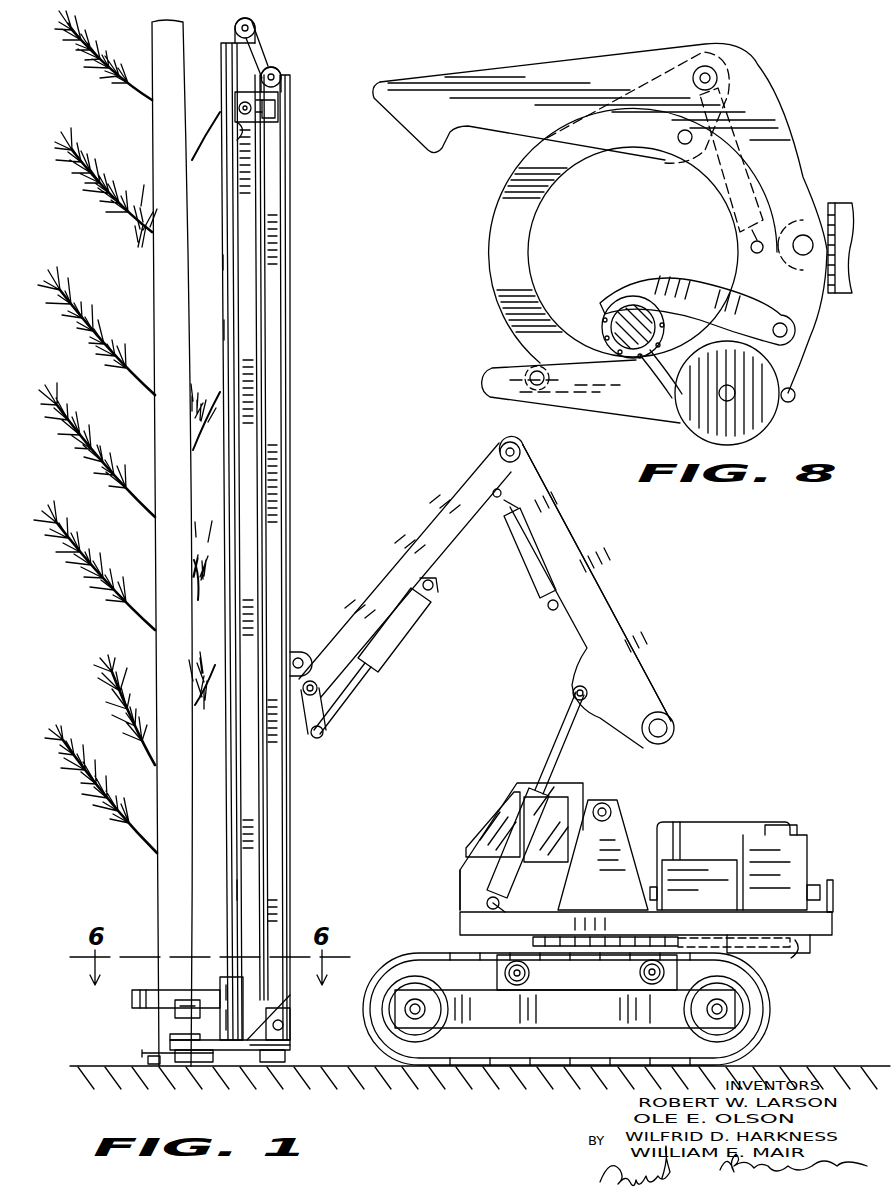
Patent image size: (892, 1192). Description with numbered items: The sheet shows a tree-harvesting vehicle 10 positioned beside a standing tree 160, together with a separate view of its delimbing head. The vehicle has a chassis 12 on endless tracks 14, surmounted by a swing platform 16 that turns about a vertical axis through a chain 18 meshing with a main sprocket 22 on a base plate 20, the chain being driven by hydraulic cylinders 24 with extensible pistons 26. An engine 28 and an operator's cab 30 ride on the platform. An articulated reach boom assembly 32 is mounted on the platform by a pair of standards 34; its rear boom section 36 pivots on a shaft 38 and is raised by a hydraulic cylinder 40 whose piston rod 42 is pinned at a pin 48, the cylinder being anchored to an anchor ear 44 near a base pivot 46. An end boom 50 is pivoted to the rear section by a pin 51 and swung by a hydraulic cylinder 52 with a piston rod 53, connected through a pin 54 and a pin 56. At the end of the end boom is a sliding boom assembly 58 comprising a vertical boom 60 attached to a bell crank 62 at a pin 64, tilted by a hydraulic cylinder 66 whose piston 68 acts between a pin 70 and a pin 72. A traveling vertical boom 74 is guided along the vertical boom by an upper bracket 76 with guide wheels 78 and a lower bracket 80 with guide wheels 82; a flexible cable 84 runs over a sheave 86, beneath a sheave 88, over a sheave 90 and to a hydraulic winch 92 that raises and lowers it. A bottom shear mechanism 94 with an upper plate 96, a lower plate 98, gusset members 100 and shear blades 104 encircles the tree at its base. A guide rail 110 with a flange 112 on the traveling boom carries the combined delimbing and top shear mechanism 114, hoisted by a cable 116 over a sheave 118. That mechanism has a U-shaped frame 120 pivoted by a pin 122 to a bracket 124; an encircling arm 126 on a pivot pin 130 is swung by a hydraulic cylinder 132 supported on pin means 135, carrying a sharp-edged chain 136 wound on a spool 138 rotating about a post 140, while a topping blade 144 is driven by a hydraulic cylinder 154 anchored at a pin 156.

In FIG. 1, the vehicle 10 is at (452, 856).
In FIG. 1, the chassis 12 is at (598, 1015).
In FIG. 1, the endless tracks 14 is at (768, 1030).
In FIG. 1, the swing platform 16 is at (832, 922).
In FIG. 1, the chain 18 is at (560, 933).
In FIG. 1, the base plate 20 is at (575, 970).
In FIG. 1, the main sprocket 22 is at (625, 938).
In FIG. 1, the hydraulic cylinders 24 is at (780, 952).
In FIG. 1, the extensible pistons 26 is at (710, 938).
In FIG. 1, the engine 28 is at (730, 822).
In FIG. 1, the operator's cab 30 is at (520, 782).
In FIG. 1, the articulated or reach boom assembly 32 is at (590, 530).
In FIG. 1, the uprights or standards 34 is at (610, 895).
In FIG. 1, the rear boom section 36 is at (590, 632).
In FIG. 1, the pivot pin or shaft 38 is at (612, 806).
In FIG. 1, the hydraulic cylinder 40 is at (506, 882).
In FIG. 1, the piston rod 42 is at (566, 720).
In FIG. 1, the anchor ear 44 is at (500, 909).
In FIG. 1, the cylinder base pivot 46 is at (486, 903).
In FIG. 1, the pin 48 is at (572, 693).
In FIG. 1, the end boom 50 is at (440, 525).
In FIG. 1, the pin 51 is at (518, 455).
In FIG. 1, the hydraulic cylinder 52 is at (538, 590).
In FIG. 1, the piston rod 53 is at (508, 512).
In FIG. 1, the pin 54 is at (550, 610).
In FIG. 1, the pin 56 is at (492, 492).
In FIG. 1, the sliding boom assembly 58 is at (314, 268).
In FIG. 1, the mast or vertical boom 60 is at (275, 312).
In FIG. 1, the bell crank 62 is at (304, 737).
In FIG. 1, the pin 64 is at (318, 690).
In FIG. 1, the hydraulic cylinder 66 is at (380, 662).
In FIG. 1, the reciprocable piston 68 is at (345, 712).
In FIG. 1, the pin 70 is at (438, 592).
In FIG. 1, the pin 72 is at (325, 738).
In FIG. 1, the traveling vertical boom 74 is at (250, 440).
In FIG. 1, the bracket 76 is at (280, 128).
In FIG. 1, the guide wheels 78 is at (235, 137).
In FIG. 1, the lower bracket 80 is at (243, 985).
In FIG. 1, the guide wheels 82 is at (285, 1026).
In FIG. 1, the flexible cable 84 is at (262, 372).
In FIG. 1, the sheave or pulley 86 is at (280, 74).
In FIG. 1, the sheave 88 is at (302, 652).
In FIG. 1, the sheave 90 is at (500, 437).
In FIG. 1, the hydraulic winch 92 is at (675, 735).
In FIG. 1, the bottom shear mechanism 94 is at (126, 1055).
In FIG. 1, the upper plate 96 is at (172, 1034).
In FIG. 1, the lower plate 98 is at (183, 1062).
In FIG. 1, the gusset members 100 is at (262, 1044).
In FIG. 1, the shear blades 104 is at (152, 1064).
In FIG. 1, the guide rail 110 is at (225, 323).
In FIG. 1, the flange 112 is at (222, 262).
In FIG. 1, the combined delimbing and top shear mechanism 114 is at (126, 1014).
In FIG. 8, the combined delimbing and top shear mechanism 114 is at (476, 256).
In FIG. 1, the cable 116 is at (264, 48).
In FIG. 1, the sheave or pulley 118 is at (252, 26).
In FIG. 8, the U-shaped frame structure 120 is at (755, 62).
In FIG. 8, the pin 122 is at (806, 235).
In FIG. 8, the bracket 124 is at (838, 296).
In FIG. 8, the encircling arm 126 is at (500, 220).
In FIG. 8, the pivot pin 130 is at (680, 144).
In FIG. 8, the hydraulic cylinder 132 is at (780, 165).
In FIG. 8, the pin means 135 is at (762, 240).
In FIG. 8, the flexible chain 136 is at (600, 330).
In FIG. 8, the spool or drum 138 is at (705, 425).
In FIG. 8, the vertical pin or post 140 is at (735, 398).
In FIG. 8, the blade 144 is at (688, 280).
In FIG. 1, the hydraulic cylinder 154 is at (180, 1000).
In FIG. 8, the pin 156 is at (530, 372).
In FIG. 1, the standing tree 160 is at (170, 527).